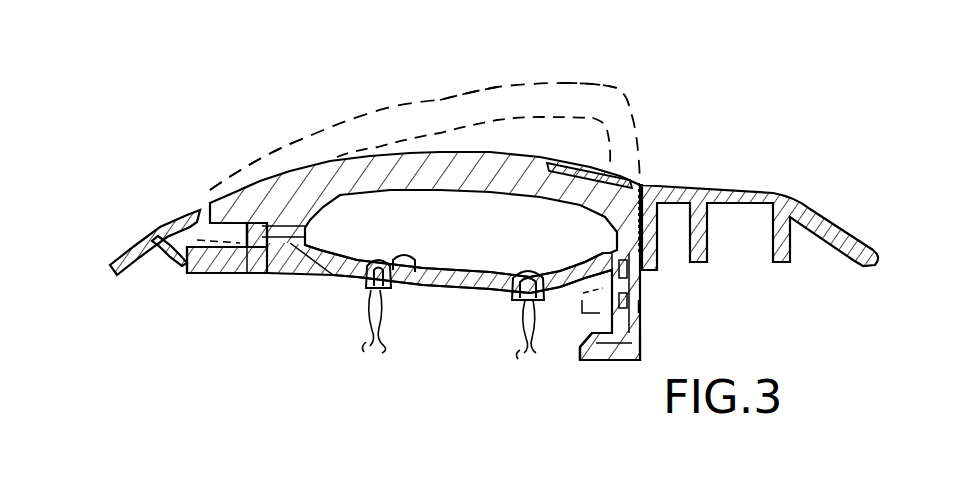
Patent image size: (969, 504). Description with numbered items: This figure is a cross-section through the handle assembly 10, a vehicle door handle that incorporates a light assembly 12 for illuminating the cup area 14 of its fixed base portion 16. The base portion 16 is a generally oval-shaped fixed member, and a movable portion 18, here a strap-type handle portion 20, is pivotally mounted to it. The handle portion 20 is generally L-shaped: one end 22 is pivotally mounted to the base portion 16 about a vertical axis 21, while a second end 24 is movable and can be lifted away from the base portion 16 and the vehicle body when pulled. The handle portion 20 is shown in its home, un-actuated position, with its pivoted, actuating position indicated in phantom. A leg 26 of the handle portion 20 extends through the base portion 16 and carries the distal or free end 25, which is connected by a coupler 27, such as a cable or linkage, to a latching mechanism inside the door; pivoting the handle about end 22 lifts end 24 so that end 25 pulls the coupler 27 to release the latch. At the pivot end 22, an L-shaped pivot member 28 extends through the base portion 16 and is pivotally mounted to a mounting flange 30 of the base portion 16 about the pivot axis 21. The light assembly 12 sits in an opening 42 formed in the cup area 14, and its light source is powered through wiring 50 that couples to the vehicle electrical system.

The handle assembly 10 is at (650, 103).
The light assembly 12 is at (340, 285).
The cup area 14 is at (455, 287).
The base portion 16 is at (165, 212).
The movable portion 18 is at (533, 148).
The handle portion 20 is at (382, 157).
The vertical axis 21 is at (177, 251).
The end of handle portion 22 is at (212, 286).
The second end of handle portion 24 is at (470, 153).
The distal end 25 is at (645, 335).
The leg 26 is at (655, 182).
The coupler 27 is at (566, 345).
The L-shaped pivot member 28 is at (229, 277).
The mounting flange 30 is at (163, 265).
The opening 42 is at (411, 272).
The wiring 50 is at (362, 322).